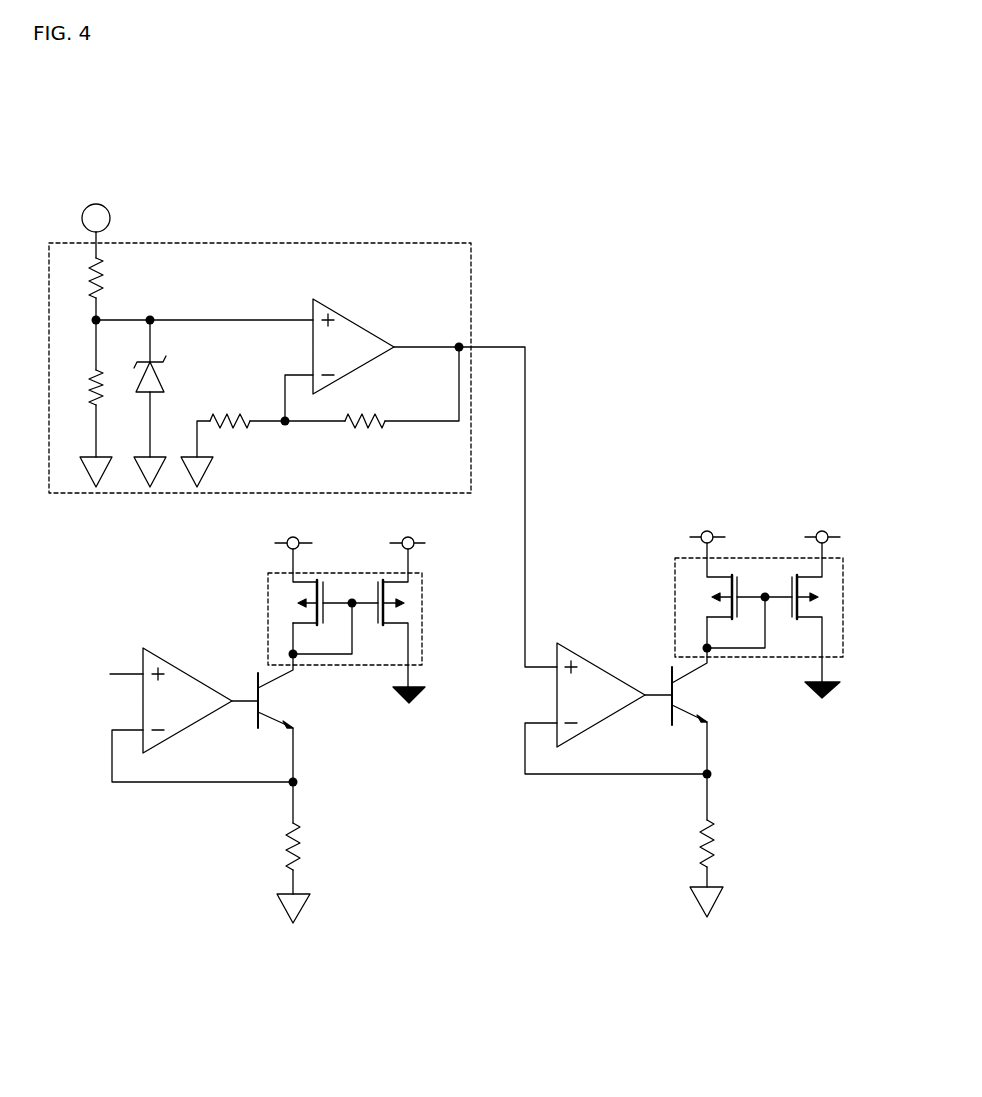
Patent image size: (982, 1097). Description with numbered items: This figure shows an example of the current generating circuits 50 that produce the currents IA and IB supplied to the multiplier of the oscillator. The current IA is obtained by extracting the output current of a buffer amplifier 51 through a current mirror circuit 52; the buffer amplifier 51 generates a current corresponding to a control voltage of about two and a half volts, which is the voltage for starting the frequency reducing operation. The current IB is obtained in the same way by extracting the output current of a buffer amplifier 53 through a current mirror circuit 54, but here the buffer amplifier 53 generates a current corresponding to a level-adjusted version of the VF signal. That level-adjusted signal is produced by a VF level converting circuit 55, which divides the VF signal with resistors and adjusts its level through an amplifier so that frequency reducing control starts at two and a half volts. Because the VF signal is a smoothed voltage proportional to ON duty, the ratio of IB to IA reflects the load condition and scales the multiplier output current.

The current generation circuit 50 is at (621, 403).
The buffer amplifier 51 is at (195, 677).
The current mirror circuit 52 is at (343, 573).
The buffer amplifier 53 is at (597, 677).
The current mirror circuit 54 is at (758, 558).
The VF level converting circuit 55 is at (452, 278).